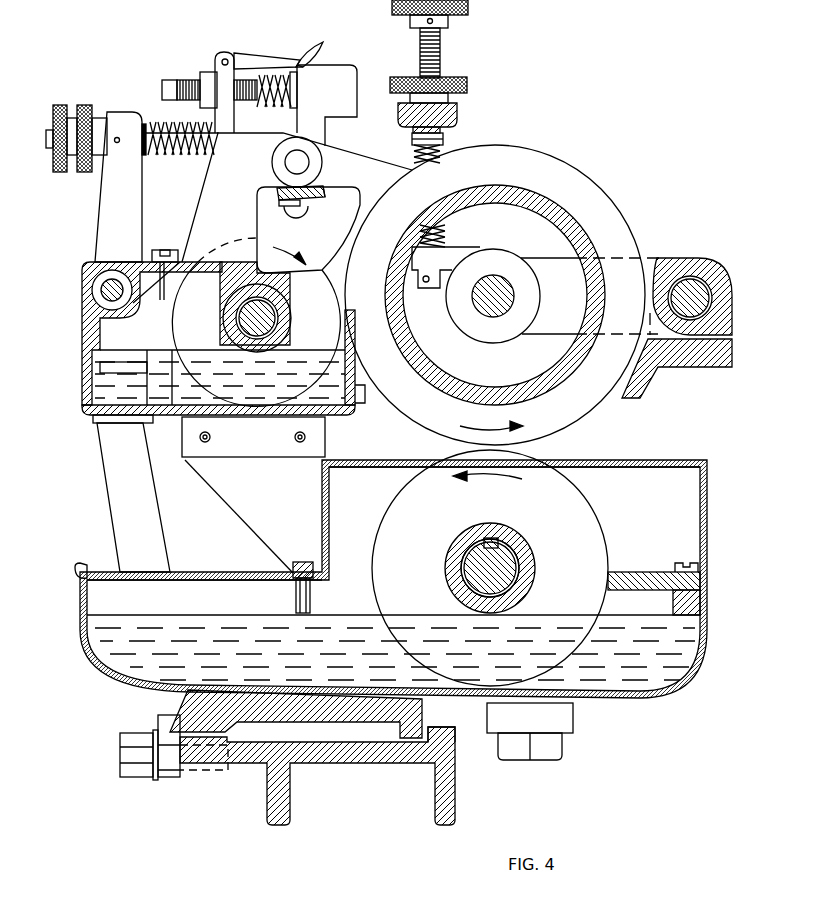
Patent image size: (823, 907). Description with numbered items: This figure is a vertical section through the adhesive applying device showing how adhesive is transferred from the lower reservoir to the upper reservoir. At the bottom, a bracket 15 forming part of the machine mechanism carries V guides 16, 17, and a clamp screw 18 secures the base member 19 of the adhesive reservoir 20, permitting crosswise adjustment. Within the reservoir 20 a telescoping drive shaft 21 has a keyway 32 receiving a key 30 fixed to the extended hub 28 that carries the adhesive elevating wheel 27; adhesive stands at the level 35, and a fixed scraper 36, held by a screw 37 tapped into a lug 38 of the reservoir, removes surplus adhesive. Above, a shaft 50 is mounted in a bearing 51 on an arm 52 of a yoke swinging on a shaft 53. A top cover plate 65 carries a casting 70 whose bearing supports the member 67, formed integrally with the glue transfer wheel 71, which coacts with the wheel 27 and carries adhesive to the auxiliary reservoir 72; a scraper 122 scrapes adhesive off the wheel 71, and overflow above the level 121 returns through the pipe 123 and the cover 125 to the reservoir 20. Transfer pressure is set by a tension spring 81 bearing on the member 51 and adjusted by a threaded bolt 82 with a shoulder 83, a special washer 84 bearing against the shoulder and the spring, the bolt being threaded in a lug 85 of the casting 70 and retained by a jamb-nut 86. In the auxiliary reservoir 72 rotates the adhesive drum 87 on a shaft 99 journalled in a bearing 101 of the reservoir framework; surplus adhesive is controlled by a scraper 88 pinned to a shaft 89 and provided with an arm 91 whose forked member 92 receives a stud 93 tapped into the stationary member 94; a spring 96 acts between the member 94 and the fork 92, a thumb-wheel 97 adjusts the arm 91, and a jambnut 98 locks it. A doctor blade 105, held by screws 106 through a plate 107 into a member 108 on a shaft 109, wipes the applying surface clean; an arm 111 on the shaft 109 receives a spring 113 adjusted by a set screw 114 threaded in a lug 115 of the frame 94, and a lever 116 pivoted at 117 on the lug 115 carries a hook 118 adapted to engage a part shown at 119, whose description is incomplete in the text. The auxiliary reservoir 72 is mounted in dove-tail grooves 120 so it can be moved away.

The bracket 15 is at (257, 773).
The V guide 16 is at (452, 736).
The V guide 17 is at (157, 723).
The clamp screw 18 is at (132, 757).
The base member 19 is at (220, 702).
The adhesive reservoir 20 is at (83, 642).
The telescoping drive shaft 21 is at (483, 568).
The adhesive elevating wheel 27 is at (388, 545).
The extended hub 28 is at (465, 597).
The key 30 is at (497, 542).
The keyway 32 is at (503, 553).
The adhesive level 35 is at (213, 617).
The fixed scraper 36 is at (638, 576).
The screw 37 is at (700, 569).
The lug 38 is at (690, 605).
The shaft 50 is at (504, 279).
The bearing 51 is at (476, 262).
The arm 52 is at (652, 268).
The shaft 53 is at (707, 299).
The top cover plate 65 is at (652, 463).
The member 67 is at (443, 383).
The casting 70 is at (713, 358).
The glue transfer wheel 71 is at (565, 172).
The auxiliary adhesive reservoir 72 is at (90, 386).
The tension spring 81 is at (440, 226).
The threaded bolt 82 is at (440, 53).
The shoulder 83 is at (445, 137).
The special washer 84 is at (413, 140).
The lug 85 is at (445, 108).
The jamb-nut 86 is at (460, 79).
The adhesive drum 87 is at (183, 335).
The scraper 88 is at (163, 277).
The shaft 89 is at (110, 288).
The arm 91 is at (113, 203).
The forked member 92 is at (117, 138).
The stud 93 is at (142, 120).
The stationary member 94 is at (210, 203).
The spring 96 is at (172, 120).
The thumb-wheel 97 is at (77, 108).
The jambnut 98 is at (50, 130).
The shaft 99 is at (250, 318).
The bearing 101 is at (234, 344).
The doctor blade 105 is at (315, 190).
The screws 106 is at (298, 211).
The plate 107 is at (283, 204).
The member 108 is at (277, 190).
The shaft 109 is at (293, 160).
The arm 111 is at (340, 79).
The spring 113 is at (274, 103).
The set screw 114 is at (177, 82).
The lug 115 is at (220, 100).
The lever 116 is at (260, 55).
The pivot 117 is at (223, 57).
The hook 118 is at (297, 60).
The shoulder 119 is at (305, 68).
The dove-tail grooves 120 is at (247, 430).
The adhesive level 121 is at (297, 364).
The scraper 122 is at (348, 348).
The pipe 123 is at (122, 505).
The cover 125 is at (190, 575).